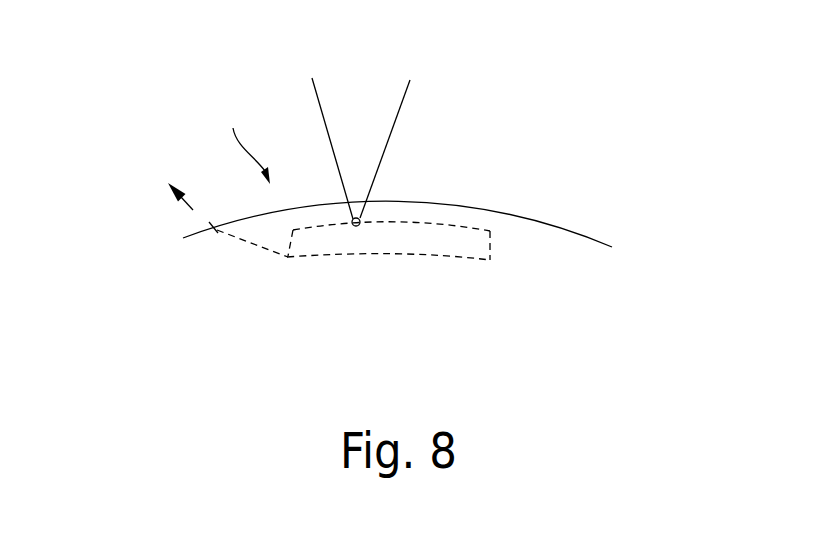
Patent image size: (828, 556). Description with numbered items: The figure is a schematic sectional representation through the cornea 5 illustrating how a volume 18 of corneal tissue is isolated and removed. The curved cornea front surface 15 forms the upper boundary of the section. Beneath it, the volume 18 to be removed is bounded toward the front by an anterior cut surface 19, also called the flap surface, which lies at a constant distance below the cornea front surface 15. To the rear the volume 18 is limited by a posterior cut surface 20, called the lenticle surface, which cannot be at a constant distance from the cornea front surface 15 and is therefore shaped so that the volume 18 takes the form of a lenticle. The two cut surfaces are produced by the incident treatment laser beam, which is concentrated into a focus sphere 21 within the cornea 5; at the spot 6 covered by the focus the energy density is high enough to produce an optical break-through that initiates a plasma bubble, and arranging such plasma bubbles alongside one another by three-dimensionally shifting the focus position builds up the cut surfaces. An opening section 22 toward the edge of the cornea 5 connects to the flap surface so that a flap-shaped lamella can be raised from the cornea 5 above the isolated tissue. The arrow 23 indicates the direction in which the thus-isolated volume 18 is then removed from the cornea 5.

The cornea 5 is at (249, 142).
The spot 6 is at (357, 227).
The cornea front surface 15 is at (553, 223).
The volume 18 is at (490, 250).
The anterior cut surface 19 is at (434, 224).
The posterior cut surface 20 is at (456, 258).
The focus sphere 21 is at (400, 107).
The opening section 22 is at (243, 240).
The arrow 23 is at (199, 222).